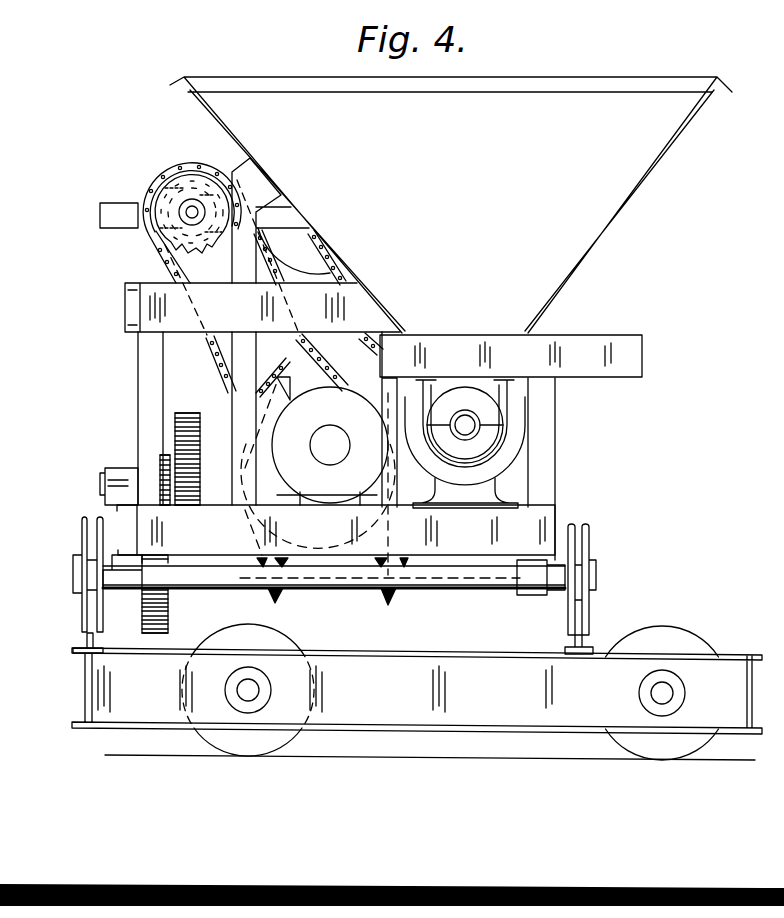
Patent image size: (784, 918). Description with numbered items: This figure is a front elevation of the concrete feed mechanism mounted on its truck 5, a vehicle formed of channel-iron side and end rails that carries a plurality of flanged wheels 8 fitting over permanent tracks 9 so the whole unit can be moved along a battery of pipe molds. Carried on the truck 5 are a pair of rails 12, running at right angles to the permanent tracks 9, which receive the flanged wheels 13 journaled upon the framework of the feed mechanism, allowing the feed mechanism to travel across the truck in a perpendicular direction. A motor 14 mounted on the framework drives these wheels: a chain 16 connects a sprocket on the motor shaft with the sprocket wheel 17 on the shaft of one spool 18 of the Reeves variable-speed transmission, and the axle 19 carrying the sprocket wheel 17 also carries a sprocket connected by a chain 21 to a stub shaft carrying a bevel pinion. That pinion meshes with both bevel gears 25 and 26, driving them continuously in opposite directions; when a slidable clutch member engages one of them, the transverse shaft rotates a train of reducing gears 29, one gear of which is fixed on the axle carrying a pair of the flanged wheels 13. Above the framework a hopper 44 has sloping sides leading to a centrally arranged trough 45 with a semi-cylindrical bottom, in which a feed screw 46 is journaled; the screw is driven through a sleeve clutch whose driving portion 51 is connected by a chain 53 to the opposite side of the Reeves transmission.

The truck 5 is at (547, 712).
The flanged wheels 8 is at (274, 746).
The permanent tracks 9 is at (355, 757).
The rails 12 is at (588, 643).
The flanged wheels 13 is at (586, 549).
The motor 14 is at (353, 483).
The chain 16 is at (262, 385).
The sprocket wheel 17 is at (163, 223).
The spool 18 is at (168, 173).
The axle 19 is at (192, 208).
The chain 21 is at (209, 356).
The bevel gear 25 is at (270, 594).
The bevel gear 26 is at (383, 603).
The train of reducing gears 29 is at (200, 449).
The hopper 44 is at (645, 171).
The trough 45 is at (505, 445).
The feed screw 46 is at (493, 416).
The driving portion of external sleeve clutch 51 is at (300, 256).
The chain 53 is at (371, 347).